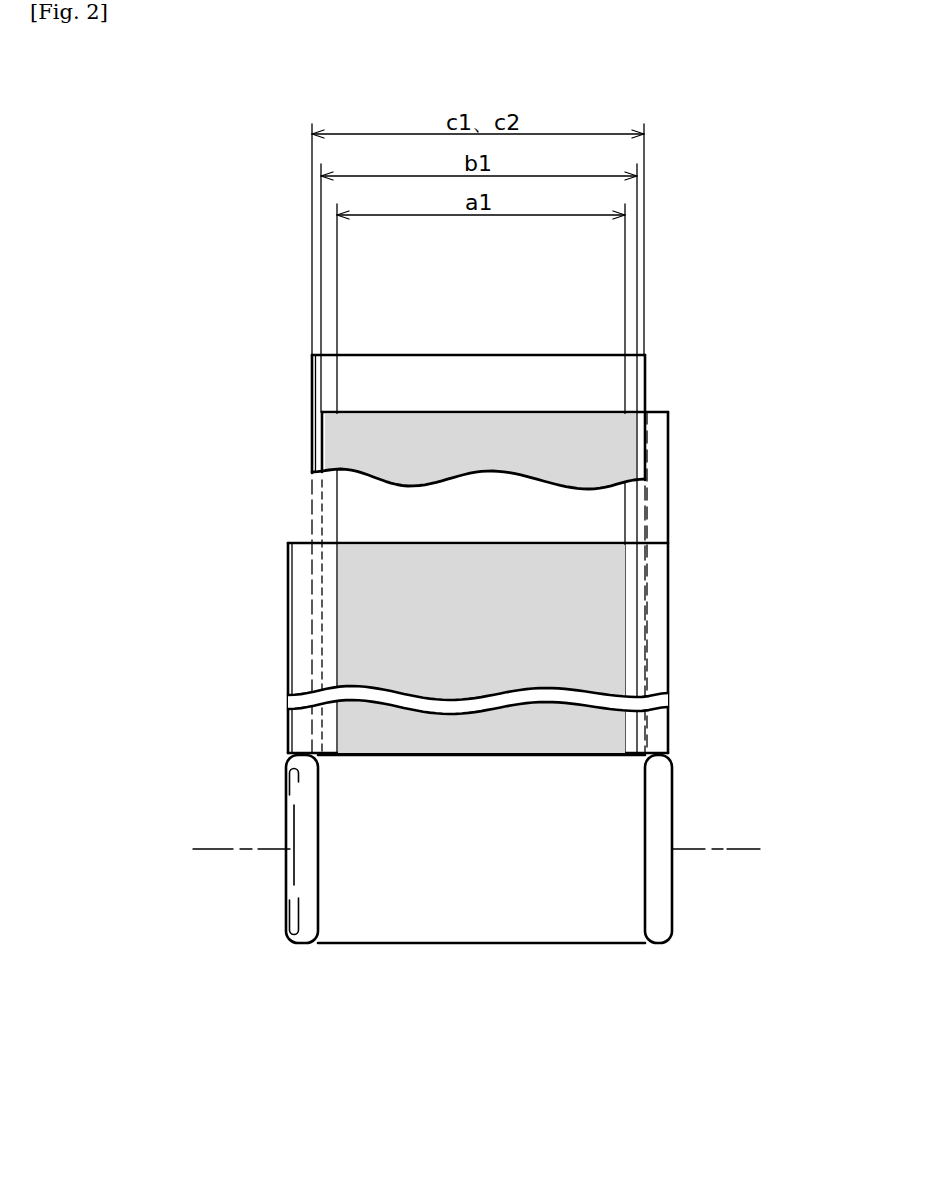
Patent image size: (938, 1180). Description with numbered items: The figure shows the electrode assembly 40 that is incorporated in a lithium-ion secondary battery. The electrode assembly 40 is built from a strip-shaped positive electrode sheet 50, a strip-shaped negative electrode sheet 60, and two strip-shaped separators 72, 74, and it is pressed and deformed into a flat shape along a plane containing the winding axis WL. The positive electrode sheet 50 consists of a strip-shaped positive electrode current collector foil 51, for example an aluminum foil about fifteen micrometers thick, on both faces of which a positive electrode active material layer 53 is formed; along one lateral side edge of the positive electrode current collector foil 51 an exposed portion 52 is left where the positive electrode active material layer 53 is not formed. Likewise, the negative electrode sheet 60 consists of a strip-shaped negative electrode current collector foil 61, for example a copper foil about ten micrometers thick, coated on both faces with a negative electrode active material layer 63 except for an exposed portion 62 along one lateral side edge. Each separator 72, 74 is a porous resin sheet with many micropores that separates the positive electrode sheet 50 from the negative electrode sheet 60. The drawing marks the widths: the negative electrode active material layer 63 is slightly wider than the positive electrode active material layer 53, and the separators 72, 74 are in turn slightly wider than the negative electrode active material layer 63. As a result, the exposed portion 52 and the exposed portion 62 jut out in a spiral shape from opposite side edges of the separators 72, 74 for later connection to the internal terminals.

The electrode assembly 40 is at (513, 918).
The positive electrode sheet 50 is at (287, 594).
The positive electrode current collector foil 51 is at (468, 541).
The exposed portion 52 is at (303, 655).
The positive electrode active material layer 53 is at (368, 642).
The negative electrode sheet 60 is at (672, 421).
The negative electrode current collector foil 61 is at (468, 410).
The exposed portion 62 is at (655, 463).
The negative electrode active material layer 63 is at (571, 426).
The separator 72 is at (329, 381).
The separator 74 is at (328, 514).
The winding axis WL is at (748, 848).